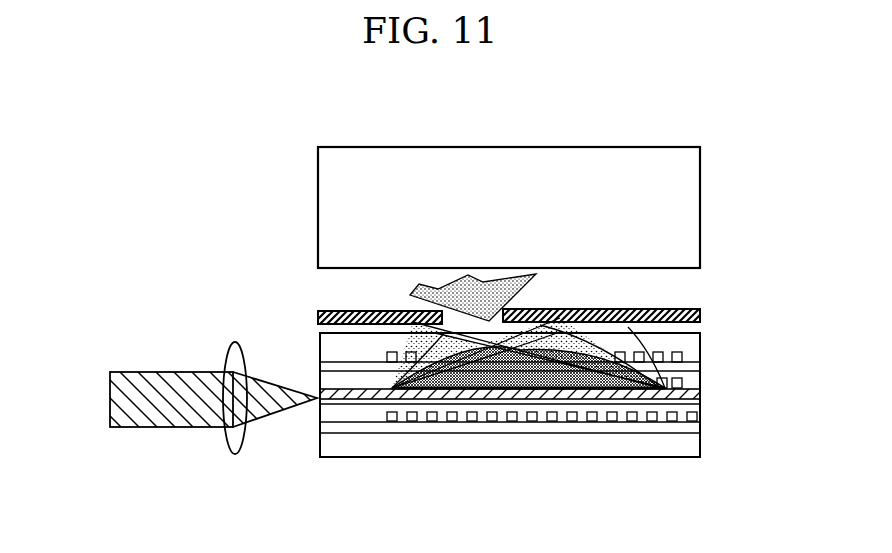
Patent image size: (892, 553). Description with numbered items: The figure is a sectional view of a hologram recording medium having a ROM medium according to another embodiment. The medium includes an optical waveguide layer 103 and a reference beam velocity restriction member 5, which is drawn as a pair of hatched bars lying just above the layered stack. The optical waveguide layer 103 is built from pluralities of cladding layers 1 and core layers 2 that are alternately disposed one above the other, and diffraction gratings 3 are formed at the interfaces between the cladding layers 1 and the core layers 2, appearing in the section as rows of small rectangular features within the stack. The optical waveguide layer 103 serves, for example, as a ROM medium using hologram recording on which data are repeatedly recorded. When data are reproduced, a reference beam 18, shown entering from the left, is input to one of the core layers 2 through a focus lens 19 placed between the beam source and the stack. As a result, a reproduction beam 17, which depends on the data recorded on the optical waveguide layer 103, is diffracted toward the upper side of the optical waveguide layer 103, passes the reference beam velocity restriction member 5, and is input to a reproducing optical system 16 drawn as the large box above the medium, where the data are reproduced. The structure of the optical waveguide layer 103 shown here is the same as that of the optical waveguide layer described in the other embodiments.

The cladding layer 1 is at (692, 445).
The core layer 2 is at (340, 363).
The diffraction grating 3 is at (625, 325).
The reference beam velocity restriction member 5 is at (318, 318).
The reproducing optical system 16 is at (678, 203).
The reproduction beam 17 is at (410, 296).
The reference beam 18 is at (120, 403).
The focus lens 19 is at (232, 440).
The optical waveguide layer 103 is at (768, 325).